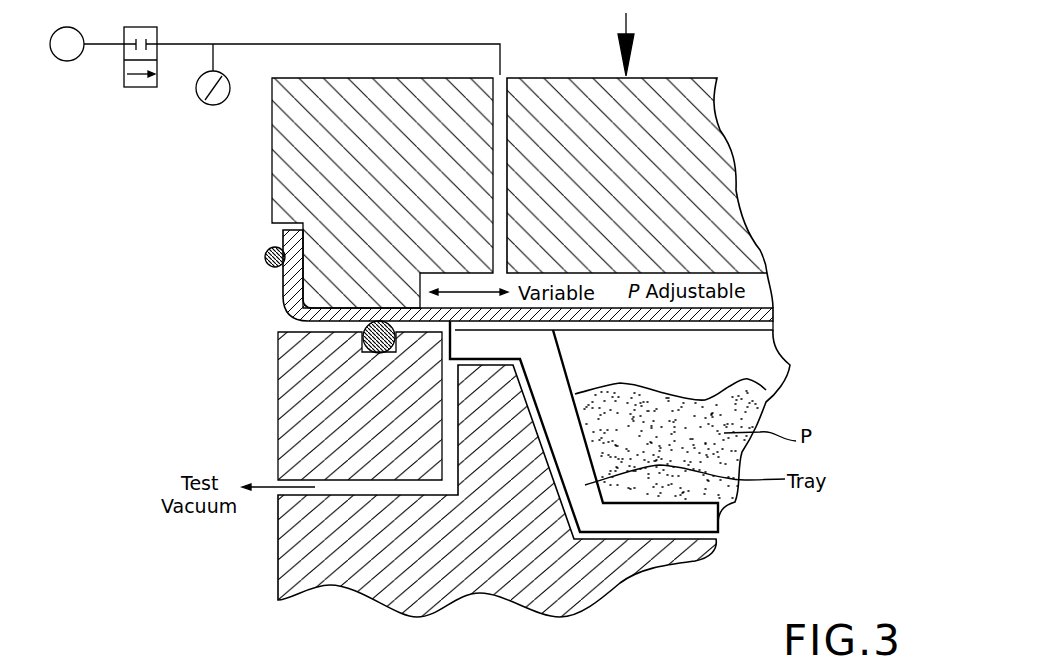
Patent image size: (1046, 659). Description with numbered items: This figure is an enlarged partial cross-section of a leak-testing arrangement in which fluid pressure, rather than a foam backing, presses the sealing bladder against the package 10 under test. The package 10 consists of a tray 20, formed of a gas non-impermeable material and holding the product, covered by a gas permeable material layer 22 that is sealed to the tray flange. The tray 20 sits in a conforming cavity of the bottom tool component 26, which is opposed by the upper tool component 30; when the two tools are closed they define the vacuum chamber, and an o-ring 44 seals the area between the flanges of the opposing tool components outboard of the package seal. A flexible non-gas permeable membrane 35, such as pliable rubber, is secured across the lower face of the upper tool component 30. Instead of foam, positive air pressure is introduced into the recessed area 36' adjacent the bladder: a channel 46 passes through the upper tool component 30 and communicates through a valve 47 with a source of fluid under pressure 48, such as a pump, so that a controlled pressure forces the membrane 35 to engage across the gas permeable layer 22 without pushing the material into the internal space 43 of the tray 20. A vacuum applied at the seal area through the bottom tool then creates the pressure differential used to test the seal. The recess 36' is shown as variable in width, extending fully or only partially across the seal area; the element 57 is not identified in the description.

The package 10 is at (815, 368).
The tray 20 is at (706, 518).
The gas permeable material layer 22 is at (748, 337).
The bottom tool component 26 is at (636, 546).
The upper tool component 30 is at (730, 160).
The flexible non-gas permeable membrane 35 is at (296, 283).
The recessed area 36' is at (572, 269).
The internal space 43 is at (718, 374).
The o-ring 44 is at (363, 330).
The channel 46 is at (502, 104).
The valve 47 is at (157, 35).
The source of fluid under pressure 48 is at (69, 52).
The lower element 57 is at (211, 655).